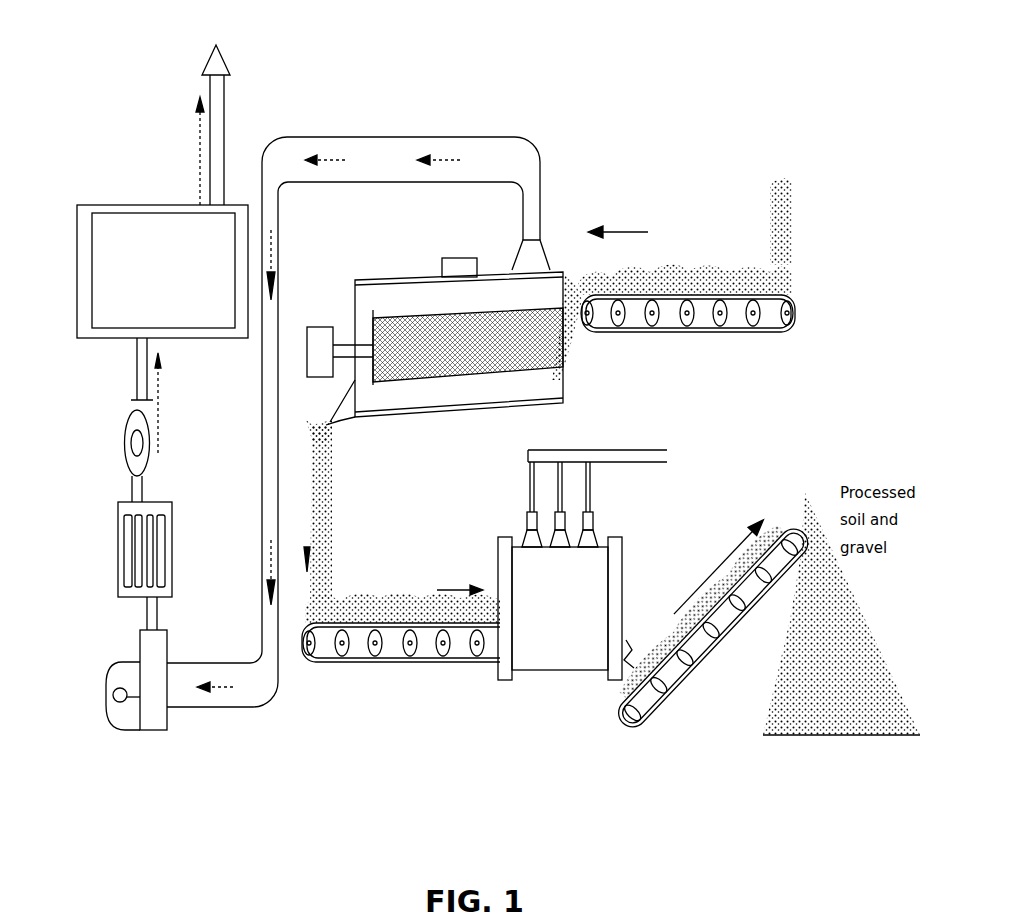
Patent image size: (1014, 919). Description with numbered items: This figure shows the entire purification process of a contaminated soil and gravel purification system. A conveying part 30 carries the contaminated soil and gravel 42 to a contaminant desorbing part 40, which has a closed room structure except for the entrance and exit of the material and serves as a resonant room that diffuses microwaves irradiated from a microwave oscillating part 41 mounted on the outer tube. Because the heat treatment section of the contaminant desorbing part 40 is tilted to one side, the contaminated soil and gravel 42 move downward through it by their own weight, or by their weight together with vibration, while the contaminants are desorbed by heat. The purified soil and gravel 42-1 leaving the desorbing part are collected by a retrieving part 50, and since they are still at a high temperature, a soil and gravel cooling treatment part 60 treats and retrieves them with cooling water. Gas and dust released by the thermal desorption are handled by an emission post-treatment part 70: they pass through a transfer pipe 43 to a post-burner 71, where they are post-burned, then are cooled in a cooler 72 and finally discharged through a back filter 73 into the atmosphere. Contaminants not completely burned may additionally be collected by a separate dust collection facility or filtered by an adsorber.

The conveying part 30 is at (738, 338).
The contaminant desorbing part 40 is at (443, 278).
The microwave oscillating part 41 is at (442, 262).
The contaminated soil and gravel 42 is at (792, 212).
The purified soil and gravel 42-1 is at (320, 497).
The transfer pipe 43 is at (478, 150).
The retrieving part 50 is at (392, 665).
The soil and gravel cooling treatment part 60 is at (563, 633).
The emission post-treatment part 70 is at (146, 387).
The post-burner 71 is at (85, 696).
The cooler 72 is at (118, 550).
The back filter 73 is at (100, 303).